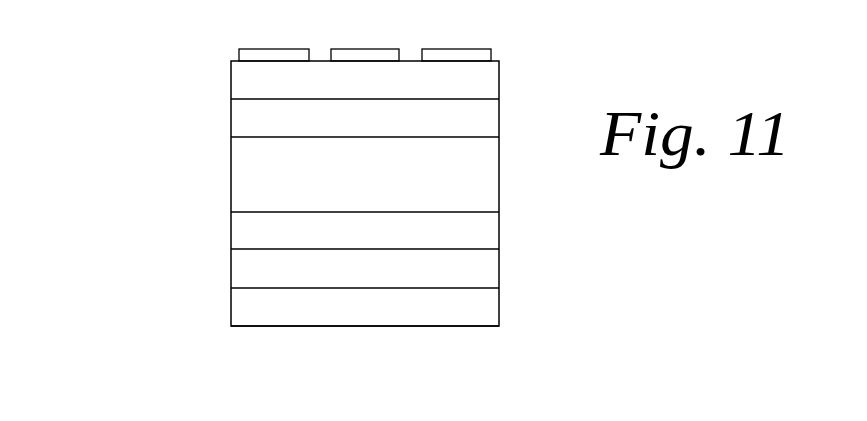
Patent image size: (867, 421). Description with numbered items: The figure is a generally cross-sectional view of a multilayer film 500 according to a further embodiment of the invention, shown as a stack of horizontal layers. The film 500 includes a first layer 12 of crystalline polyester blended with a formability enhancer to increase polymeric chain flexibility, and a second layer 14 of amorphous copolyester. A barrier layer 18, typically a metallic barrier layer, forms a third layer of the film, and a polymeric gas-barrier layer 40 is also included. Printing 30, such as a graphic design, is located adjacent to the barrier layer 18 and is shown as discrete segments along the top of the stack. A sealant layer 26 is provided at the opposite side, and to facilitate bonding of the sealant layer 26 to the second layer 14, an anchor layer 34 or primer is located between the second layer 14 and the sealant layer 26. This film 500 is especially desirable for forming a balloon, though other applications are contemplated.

The film 500 is at (110, 188).
The printing 30 is at (498, 52).
The barrier layer 18 is at (243, 82).
The polymeric gas-barrier layer 40 is at (243, 120).
The first layer 12 is at (243, 172).
The second layer 14 is at (243, 233).
The anchor layer 34 is at (243, 274).
The sealant layer 26 is at (243, 311).